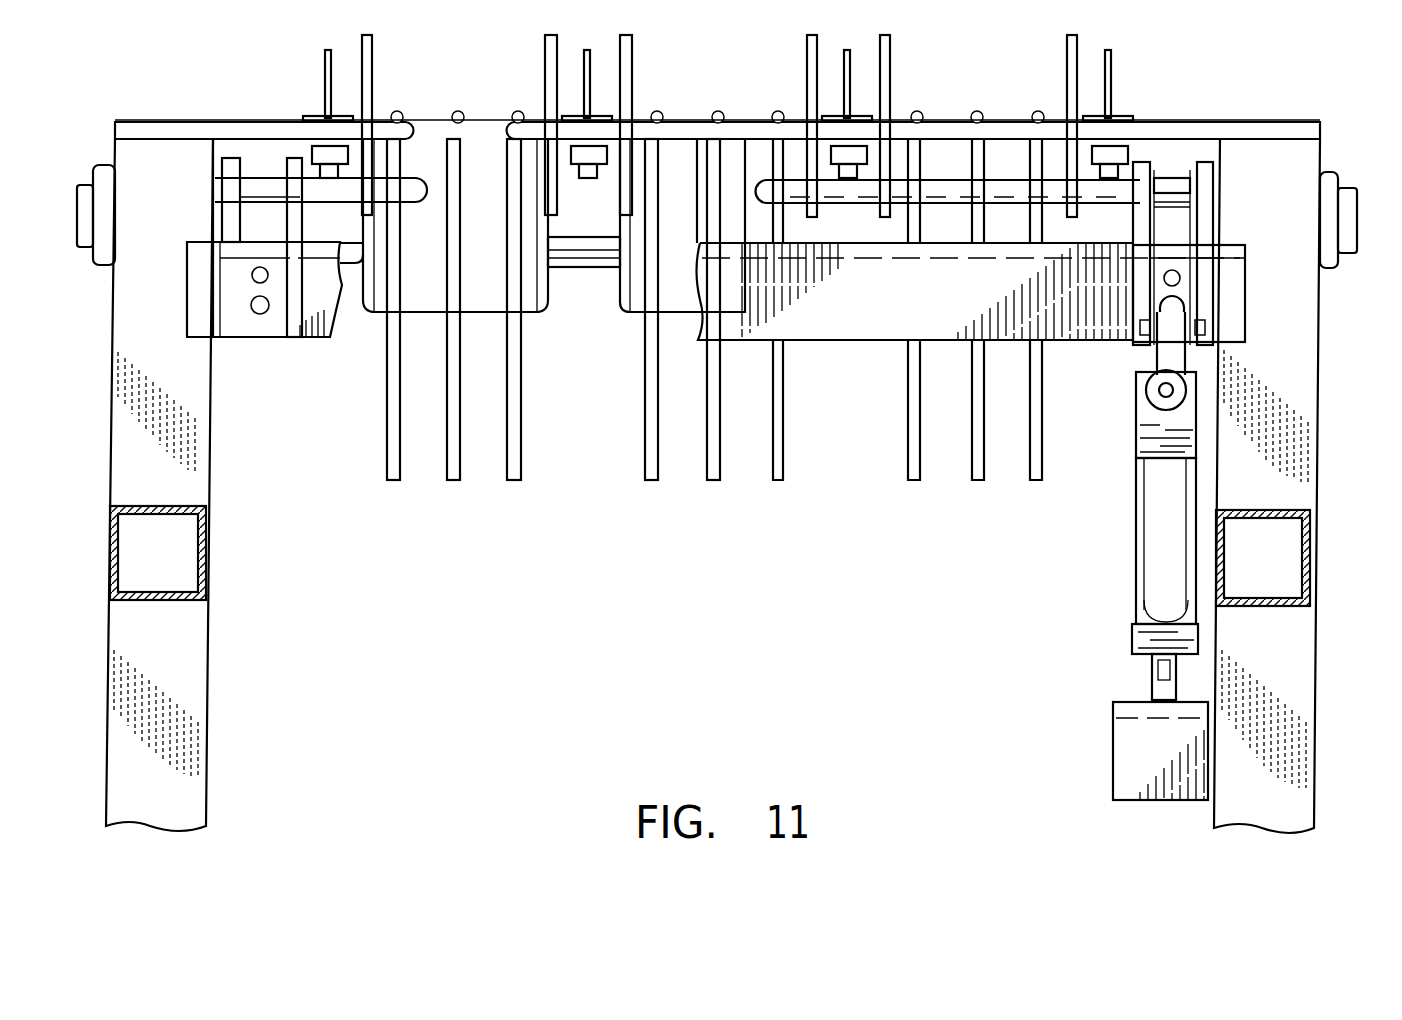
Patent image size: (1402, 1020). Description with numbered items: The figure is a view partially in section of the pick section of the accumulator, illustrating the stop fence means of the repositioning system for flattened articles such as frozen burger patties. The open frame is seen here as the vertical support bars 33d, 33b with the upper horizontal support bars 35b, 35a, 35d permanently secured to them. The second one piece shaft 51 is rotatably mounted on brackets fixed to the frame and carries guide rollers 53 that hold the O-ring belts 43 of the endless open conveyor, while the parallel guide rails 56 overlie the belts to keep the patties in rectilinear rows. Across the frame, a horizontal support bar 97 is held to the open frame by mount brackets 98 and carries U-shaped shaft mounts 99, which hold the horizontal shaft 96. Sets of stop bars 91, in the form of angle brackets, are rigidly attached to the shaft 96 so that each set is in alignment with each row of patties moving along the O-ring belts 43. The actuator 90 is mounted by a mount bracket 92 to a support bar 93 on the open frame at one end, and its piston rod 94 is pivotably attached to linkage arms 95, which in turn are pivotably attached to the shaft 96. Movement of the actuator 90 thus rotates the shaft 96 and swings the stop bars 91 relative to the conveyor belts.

The vertical support bar 33d is at (188, 657).
The vertical support bar 33b is at (1290, 659).
The upper horizontal support bar 35b is at (182, 565).
The upper horizontal support bar 35a is at (1288, 575).
The upper horizontal support bar 35d is at (1237, 135).
The guide rollers 53 is at (427, 130).
The second one piece shaft 51 is at (572, 230).
The guide rails 56 is at (1112, 60).
The stop bars 91 is at (1070, 90).
The horizontal shaft 96 is at (960, 190).
The horizontal support bar 97 is at (893, 318).
The U-shaped shaft mounts 99 is at (292, 160).
The linkage arms 95 is at (1152, 232).
The mount brackets 98 is at (272, 320).
The O-ring belts 43 is at (513, 490).
The piston rod 94 is at (1140, 395).
The actuator 90 is at (1148, 492).
The mount bracket 92 is at (1132, 652).
The support bar 93 is at (1128, 730).